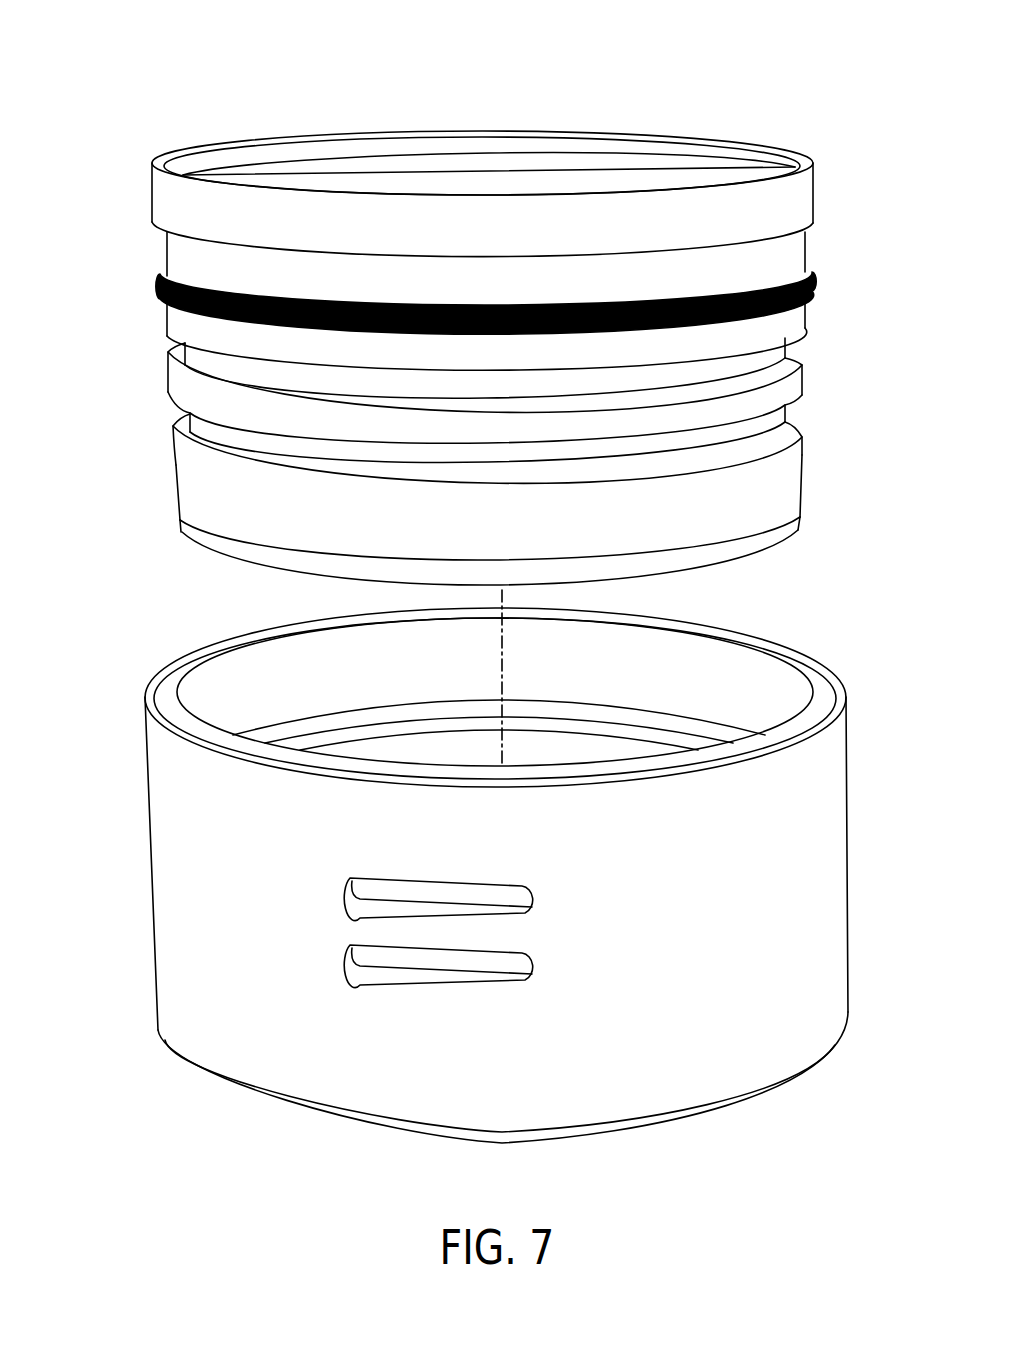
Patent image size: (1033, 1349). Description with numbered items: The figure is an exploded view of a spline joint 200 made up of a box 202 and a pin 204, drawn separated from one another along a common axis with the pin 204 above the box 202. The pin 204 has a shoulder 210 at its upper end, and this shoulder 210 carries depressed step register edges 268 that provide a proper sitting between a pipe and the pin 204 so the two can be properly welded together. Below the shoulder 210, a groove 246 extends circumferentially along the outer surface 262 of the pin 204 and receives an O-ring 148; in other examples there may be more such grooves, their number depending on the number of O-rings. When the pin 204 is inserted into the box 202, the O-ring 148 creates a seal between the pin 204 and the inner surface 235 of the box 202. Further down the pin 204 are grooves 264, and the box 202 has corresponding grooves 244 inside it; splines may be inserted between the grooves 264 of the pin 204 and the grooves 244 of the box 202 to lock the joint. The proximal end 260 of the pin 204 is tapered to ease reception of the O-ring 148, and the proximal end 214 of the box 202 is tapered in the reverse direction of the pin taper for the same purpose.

The spline joint 200 is at (122, 79).
The box 202 is at (849, 846).
The pin 204 is at (800, 487).
The shoulder 210 is at (815, 184).
The proximal end 214 is at (146, 697).
The inner surface 235 is at (748, 663).
The grooves 244 is at (640, 723).
The groove 246 is at (808, 272).
The O-ring 148 is at (811, 290).
The proximal end 260 is at (200, 548).
The outer surface 262 is at (797, 530).
The grooves 264 is at (802, 393).
The depressed step register edges 268 is at (632, 157).